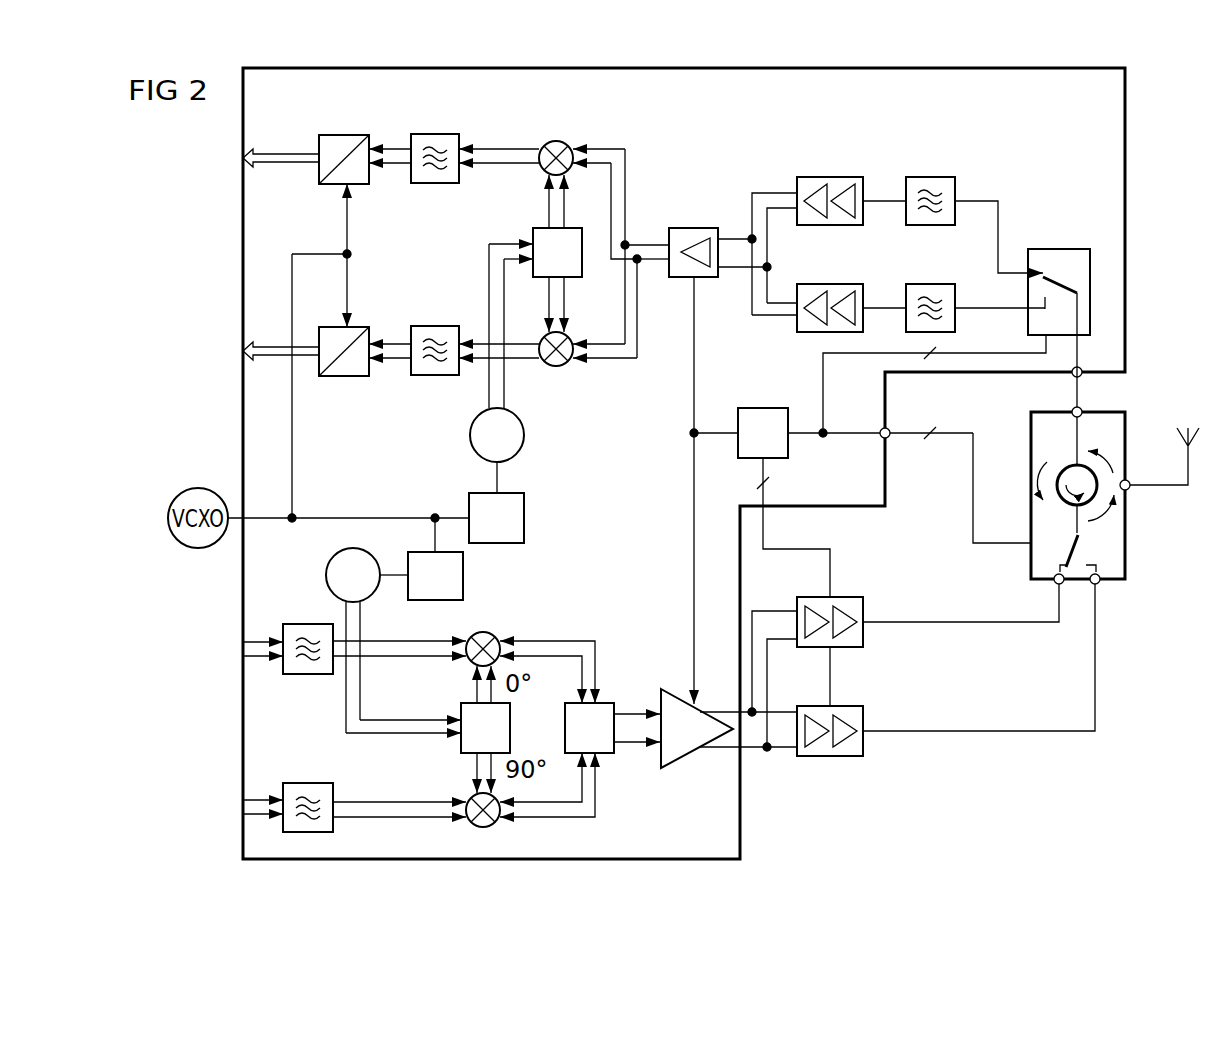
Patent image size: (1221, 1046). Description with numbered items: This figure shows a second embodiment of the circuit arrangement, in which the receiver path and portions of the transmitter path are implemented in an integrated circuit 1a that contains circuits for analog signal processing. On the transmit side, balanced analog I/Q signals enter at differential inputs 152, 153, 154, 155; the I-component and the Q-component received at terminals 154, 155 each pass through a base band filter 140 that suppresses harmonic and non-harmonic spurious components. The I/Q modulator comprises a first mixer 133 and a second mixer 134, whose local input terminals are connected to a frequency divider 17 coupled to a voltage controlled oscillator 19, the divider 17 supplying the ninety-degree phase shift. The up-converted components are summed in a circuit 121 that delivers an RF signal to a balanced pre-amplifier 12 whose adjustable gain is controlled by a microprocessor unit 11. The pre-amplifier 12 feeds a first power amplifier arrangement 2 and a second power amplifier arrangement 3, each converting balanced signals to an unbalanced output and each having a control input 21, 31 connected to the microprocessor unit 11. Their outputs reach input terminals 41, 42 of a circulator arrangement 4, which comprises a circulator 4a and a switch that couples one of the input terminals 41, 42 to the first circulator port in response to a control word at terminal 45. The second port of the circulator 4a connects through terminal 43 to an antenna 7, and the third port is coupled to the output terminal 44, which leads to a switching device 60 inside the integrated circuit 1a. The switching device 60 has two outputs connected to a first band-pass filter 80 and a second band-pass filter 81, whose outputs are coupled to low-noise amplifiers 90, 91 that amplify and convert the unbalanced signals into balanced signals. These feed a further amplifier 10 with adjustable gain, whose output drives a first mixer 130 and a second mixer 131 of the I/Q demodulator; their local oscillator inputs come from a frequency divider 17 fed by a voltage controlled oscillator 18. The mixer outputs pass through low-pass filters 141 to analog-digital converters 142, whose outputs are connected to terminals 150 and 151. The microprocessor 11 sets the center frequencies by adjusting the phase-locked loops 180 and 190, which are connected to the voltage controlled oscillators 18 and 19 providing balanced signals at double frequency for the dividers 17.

The integrated circuit 1a is at (243, 245).
The terminal 150 is at (243, 155).
The terminal 151 is at (243, 348).
The analog-digital converter 142 is at (344, 135).
The low-pass filter 141 is at (434, 134).
The first mixer 130 is at (554, 142).
The second mixer 131 is at (556, 366).
The frequency divider 17 is at (542, 228).
The amplifier 10 is at (692, 228).
The low-noise amplifier 90 is at (830, 177).
The low-noise amplifier 91 is at (830, 284).
The first band-pass filter 80 is at (930, 177).
The second band-pass filter 81 is at (930, 284).
The switching device 60 is at (1057, 249).
The microprocessor unit 11 is at (760, 408).
The terminal 45 is at (1028, 548).
The balanced pre-amplifier 12 is at (688, 762).
The control input 31 is at (829, 598).
The second power amplifier arrangement 3 is at (905, 649).
The control input 21 is at (829, 706).
The first power amplifier arrangement 2 is at (946, 702).
The circulator arrangement 4 is at (1100, 495).
The circulator 4a is at (1071, 467).
The output terminal 44 is at (1076, 413).
The terminal 43 is at (1132, 490).
The input terminal 41 is at (1057, 586).
The input terminal 42 is at (1101, 585).
The antenna 7 is at (1192, 426).
The voltage controlled oscillator 18 is at (520, 448).
The phase-locked loop 180 is at (524, 518).
The voltage controlled oscillator 19 is at (326, 575).
The phase-locked loop 190 is at (463, 575).
The base band filter 140 is at (308, 676).
The differential input 152 is at (243, 640).
The differential input 153 is at (243, 656).
The terminal 154 is at (243, 798).
The terminal 155 is at (243, 814).
The first mixer 133 is at (487, 634).
The second mixer 134 is at (498, 825).
The circuit 121 is at (604, 703).